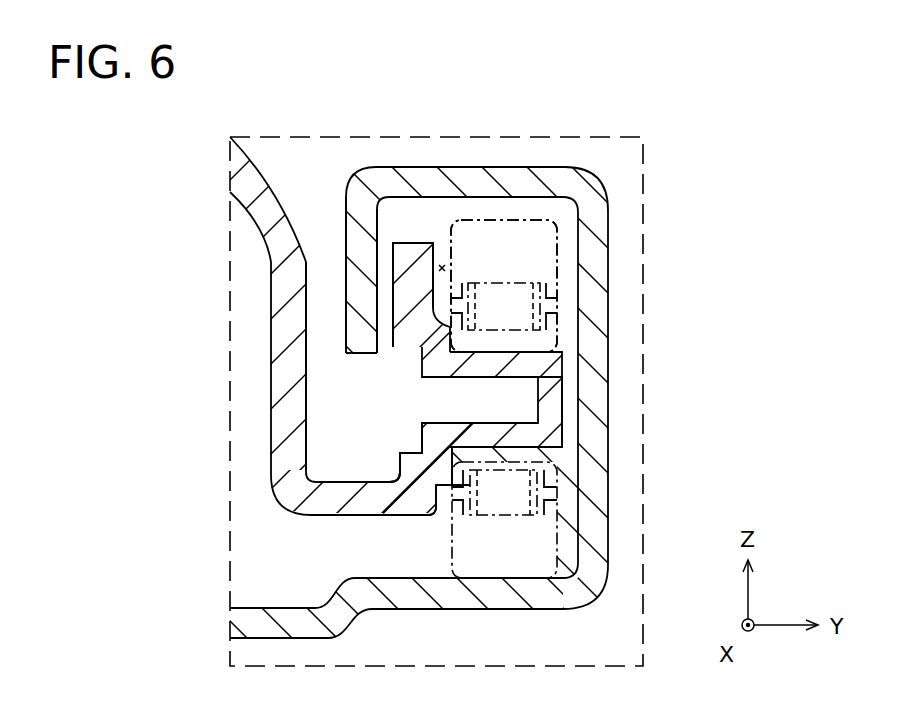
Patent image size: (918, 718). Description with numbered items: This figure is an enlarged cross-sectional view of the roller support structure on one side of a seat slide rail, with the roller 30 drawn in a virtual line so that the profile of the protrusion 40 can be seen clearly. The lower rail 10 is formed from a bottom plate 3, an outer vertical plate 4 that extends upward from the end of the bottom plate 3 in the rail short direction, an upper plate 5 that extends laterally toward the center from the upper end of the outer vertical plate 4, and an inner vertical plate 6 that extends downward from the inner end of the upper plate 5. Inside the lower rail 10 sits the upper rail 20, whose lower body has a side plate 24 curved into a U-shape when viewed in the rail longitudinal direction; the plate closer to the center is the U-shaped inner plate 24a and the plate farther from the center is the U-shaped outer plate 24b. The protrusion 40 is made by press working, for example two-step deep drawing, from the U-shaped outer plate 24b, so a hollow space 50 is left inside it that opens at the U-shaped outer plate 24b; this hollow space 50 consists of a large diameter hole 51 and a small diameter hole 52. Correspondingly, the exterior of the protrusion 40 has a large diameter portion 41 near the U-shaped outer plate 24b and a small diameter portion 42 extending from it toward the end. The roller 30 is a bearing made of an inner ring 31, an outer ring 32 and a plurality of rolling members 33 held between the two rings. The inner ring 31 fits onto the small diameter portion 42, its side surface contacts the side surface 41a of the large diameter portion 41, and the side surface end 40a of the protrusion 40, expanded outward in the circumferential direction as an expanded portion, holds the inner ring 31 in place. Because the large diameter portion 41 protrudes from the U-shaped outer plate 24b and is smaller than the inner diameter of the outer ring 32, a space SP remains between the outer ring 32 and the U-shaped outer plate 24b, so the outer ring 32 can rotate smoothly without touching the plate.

The lower rail 10 is at (612, 165).
The upper rail 20 is at (246, 250).
The side plate 24 is at (392, 100).
The U-shaped inner plate 24a is at (305, 275).
The U-shaped outer plate 24b is at (413, 243).
The space SP is at (442, 266).
The upper plate 5 is at (473, 167).
The inner vertical plate 6 is at (346, 296).
The outer vertical plate 4 is at (608, 530).
The bottom plate 3 is at (510, 603).
The roller 30 is at (706, 238).
The outer ring 32 is at (557, 253).
The rolling member 33 is at (540, 301).
The inner ring 31 is at (557, 325).
The protrusion 40 is at (562, 412).
The expanded portion 40a is at (562, 351).
The small diameter portion 42 is at (515, 440).
The large diameter portion 41 is at (443, 480).
The side surface of the large diameter portion 41a is at (456, 462).
The hollow space 50 is at (148, 352).
The large diameter hole 51 is at (400, 450).
The small diameter hole 52 is at (452, 422).